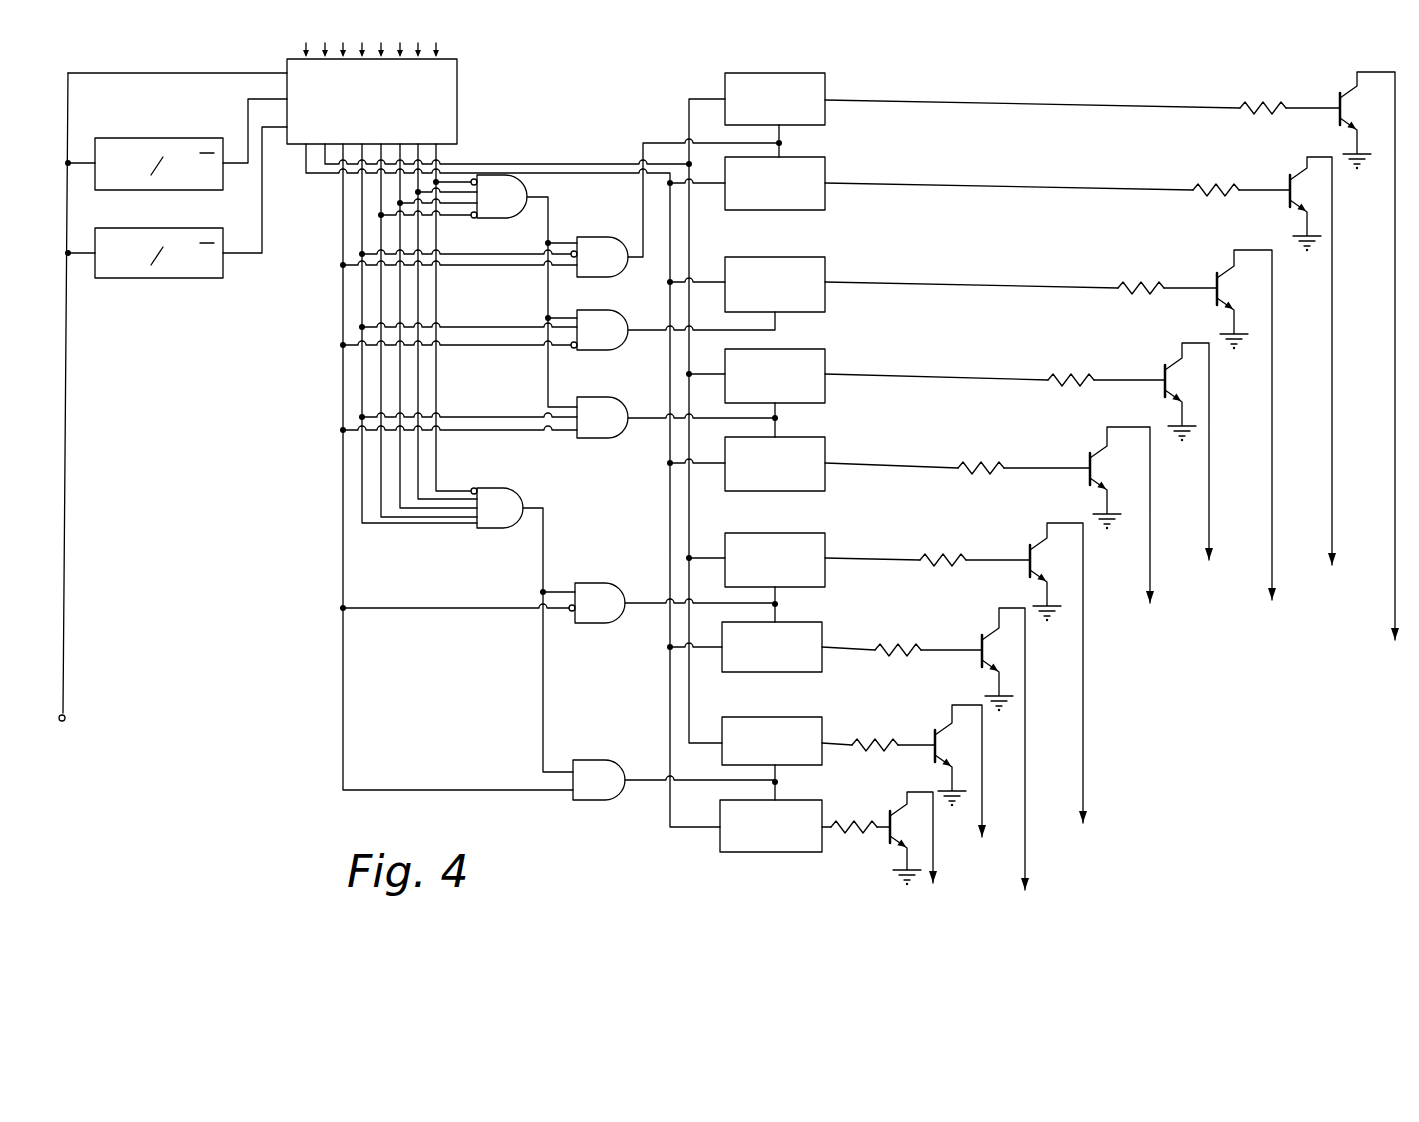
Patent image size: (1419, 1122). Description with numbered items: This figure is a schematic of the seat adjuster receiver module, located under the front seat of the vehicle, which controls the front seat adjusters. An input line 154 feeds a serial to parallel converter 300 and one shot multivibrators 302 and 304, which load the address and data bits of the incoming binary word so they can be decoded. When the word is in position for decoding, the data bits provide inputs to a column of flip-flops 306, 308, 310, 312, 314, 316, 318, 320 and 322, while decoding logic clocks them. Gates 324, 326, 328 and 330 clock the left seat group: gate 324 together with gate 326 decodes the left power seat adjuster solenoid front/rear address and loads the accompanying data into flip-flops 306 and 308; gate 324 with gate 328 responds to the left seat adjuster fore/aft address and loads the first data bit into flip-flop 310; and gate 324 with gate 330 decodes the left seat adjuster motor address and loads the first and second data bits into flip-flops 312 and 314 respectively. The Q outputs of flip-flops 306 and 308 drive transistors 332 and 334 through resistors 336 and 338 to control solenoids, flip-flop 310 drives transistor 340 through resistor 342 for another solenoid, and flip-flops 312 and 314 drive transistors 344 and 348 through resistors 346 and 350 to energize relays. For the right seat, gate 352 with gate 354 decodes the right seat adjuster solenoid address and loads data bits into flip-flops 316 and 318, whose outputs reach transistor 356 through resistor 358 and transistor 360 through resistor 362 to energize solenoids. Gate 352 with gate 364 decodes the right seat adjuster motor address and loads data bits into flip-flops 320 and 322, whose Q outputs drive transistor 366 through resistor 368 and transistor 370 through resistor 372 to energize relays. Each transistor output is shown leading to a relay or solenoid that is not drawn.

The trigger input line 154 is at (65, 507).
The serial to parallel converter 300 is at (432, 94).
The one shot multivibrator 302 is at (150, 270).
The one shot multivibrator 304 is at (152, 182).
The flip-flop 306 is at (800, 82).
The flip-flop 308 is at (808, 165).
The flip-flop 310 is at (792, 267).
The flip-flop 312 is at (795, 360).
The flip-flop 314 is at (800, 447).
The flip-flop 316 is at (783, 545).
The flip-flop 318 is at (798, 627).
The flip-flop 320 is at (755, 733).
The flip-flop 322 is at (747, 843).
The gate 324 is at (497, 202).
The gate 326 is at (600, 255).
The gate 328 is at (597, 335).
The gate 330 is at (603, 430).
The transistor 332 is at (1347, 90).
The transistor 334 is at (1297, 178).
The resistor 336 is at (1257, 103).
The resistor 338 is at (1205, 188).
The transistor 340 is at (1225, 270).
The resistor 342 is at (1125, 283).
The transistor 344 is at (1172, 360).
The resistor 346 is at (1070, 373).
The transistor 348 is at (1107, 445).
The resistor 350 is at (988, 463).
The gate 352 is at (503, 512).
The gate 354 is at (598, 595).
The transistor 356 is at (1040, 542).
The resistor 358 is at (945, 552).
The transistor 360 is at (993, 627).
The resistor 362 is at (905, 645).
The gate 364 is at (595, 767).
The transistor 366 is at (947, 723).
The resistor 368 is at (885, 738).
The transistor 370 is at (895, 810).
The resistor 372 is at (847, 832).